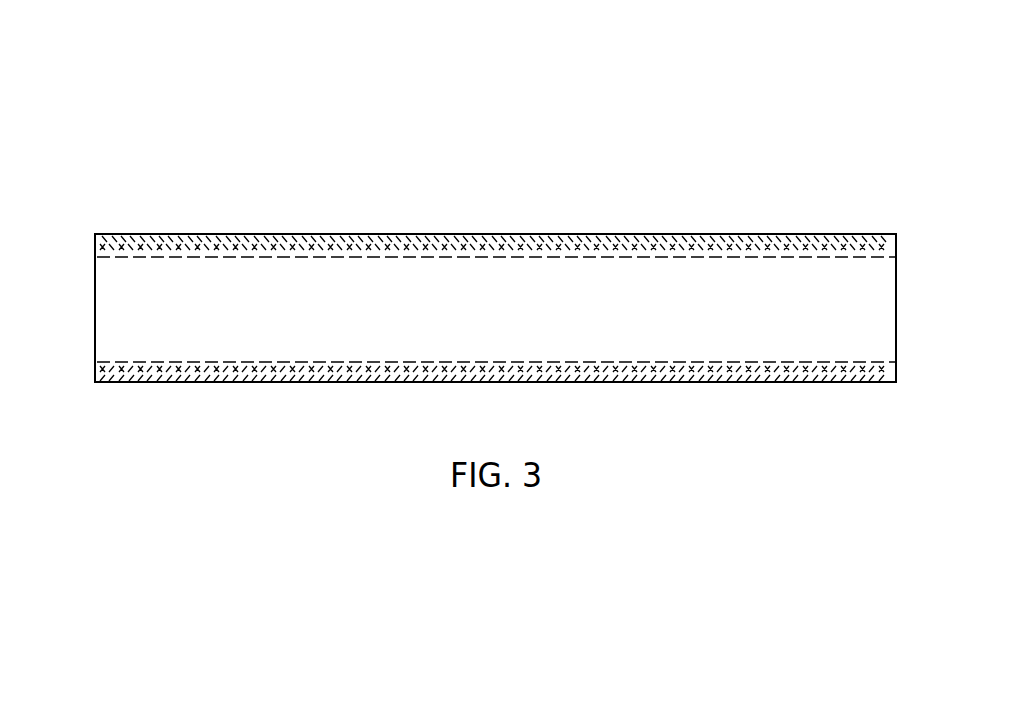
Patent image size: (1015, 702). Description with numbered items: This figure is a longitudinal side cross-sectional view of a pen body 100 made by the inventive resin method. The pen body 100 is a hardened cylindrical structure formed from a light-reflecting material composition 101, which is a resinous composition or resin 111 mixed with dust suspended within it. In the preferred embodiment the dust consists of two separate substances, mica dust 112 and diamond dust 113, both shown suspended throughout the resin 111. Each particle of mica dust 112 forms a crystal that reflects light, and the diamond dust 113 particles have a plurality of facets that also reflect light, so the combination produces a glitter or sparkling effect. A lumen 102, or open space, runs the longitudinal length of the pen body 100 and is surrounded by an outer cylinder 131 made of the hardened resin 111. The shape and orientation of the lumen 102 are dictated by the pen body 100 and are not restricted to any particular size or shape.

The pen body 100 is at (245, 129).
The material composition 101 is at (317, 235).
The lumen 102 is at (875, 335).
The resin 111 is at (120, 242).
The mica dust 112 is at (819, 382).
The diamond dust 113 is at (748, 248).
The outer cylinder 131 is at (490, 235).